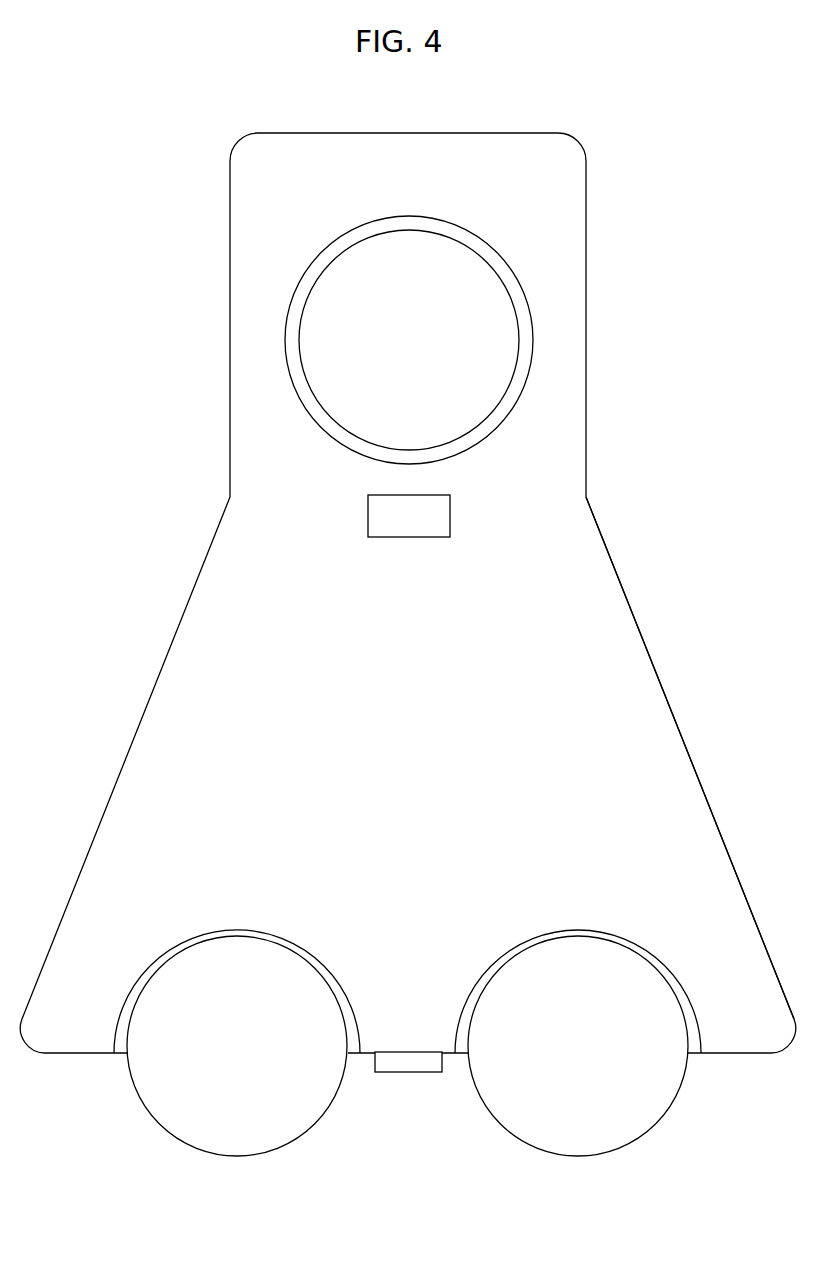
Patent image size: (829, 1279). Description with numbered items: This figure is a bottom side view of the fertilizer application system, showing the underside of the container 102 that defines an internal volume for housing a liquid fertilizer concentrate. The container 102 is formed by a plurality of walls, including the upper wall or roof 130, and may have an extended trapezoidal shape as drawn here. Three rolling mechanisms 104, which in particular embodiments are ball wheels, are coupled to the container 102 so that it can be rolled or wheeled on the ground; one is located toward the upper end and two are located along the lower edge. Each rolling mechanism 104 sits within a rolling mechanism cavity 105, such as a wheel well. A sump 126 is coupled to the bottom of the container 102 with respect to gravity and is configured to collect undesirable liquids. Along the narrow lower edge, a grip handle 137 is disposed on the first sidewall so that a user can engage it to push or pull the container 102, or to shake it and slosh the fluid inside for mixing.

The container 102 is at (158, 650).
The rolling mechanism 104 is at (393, 348).
The rolling mechanism cavity 105 is at (523, 330).
The sump 126 is at (393, 526).
The upper wall 130 is at (603, 620).
The grip handle 137 is at (410, 1062).